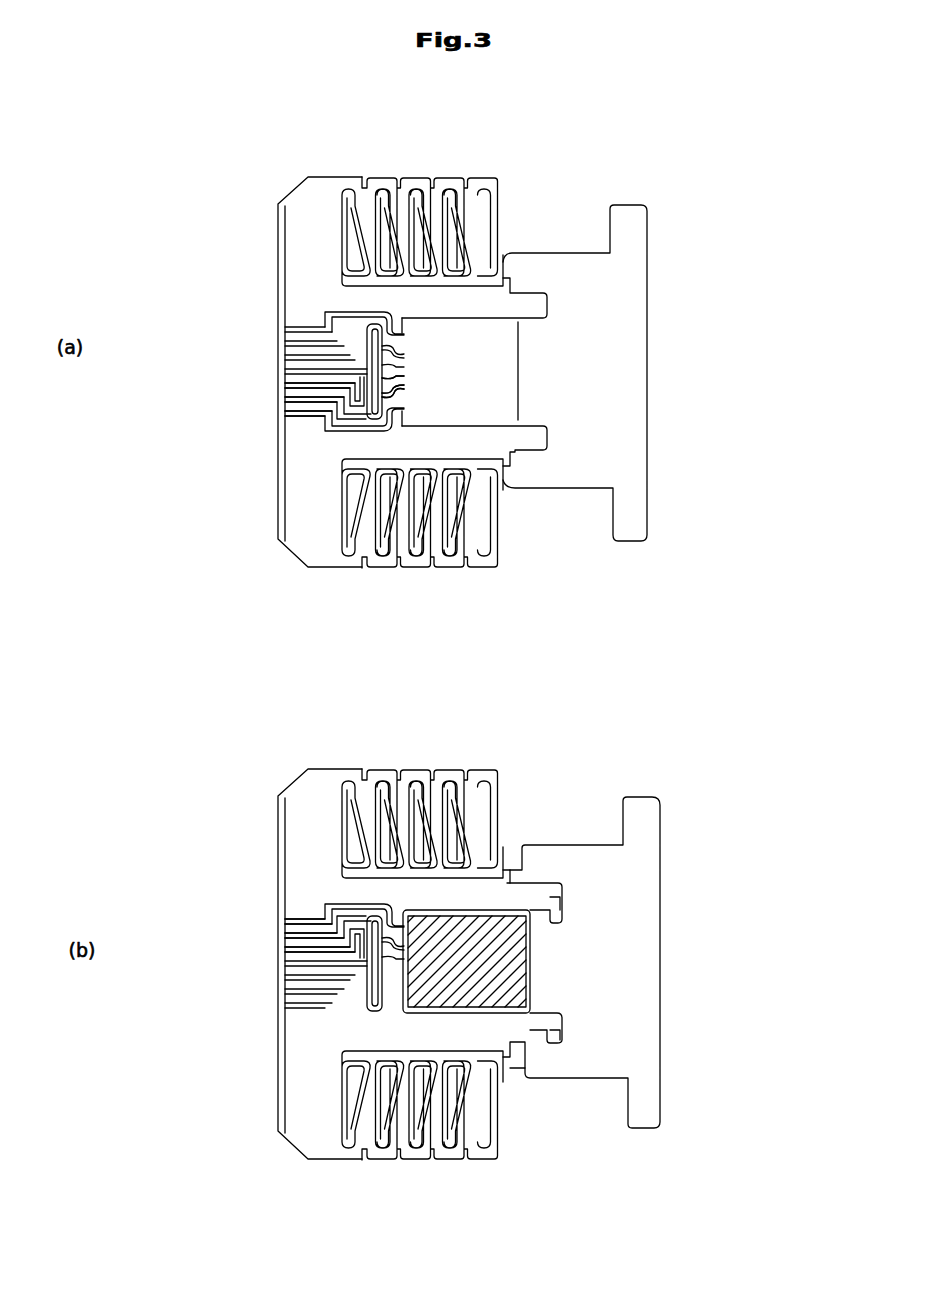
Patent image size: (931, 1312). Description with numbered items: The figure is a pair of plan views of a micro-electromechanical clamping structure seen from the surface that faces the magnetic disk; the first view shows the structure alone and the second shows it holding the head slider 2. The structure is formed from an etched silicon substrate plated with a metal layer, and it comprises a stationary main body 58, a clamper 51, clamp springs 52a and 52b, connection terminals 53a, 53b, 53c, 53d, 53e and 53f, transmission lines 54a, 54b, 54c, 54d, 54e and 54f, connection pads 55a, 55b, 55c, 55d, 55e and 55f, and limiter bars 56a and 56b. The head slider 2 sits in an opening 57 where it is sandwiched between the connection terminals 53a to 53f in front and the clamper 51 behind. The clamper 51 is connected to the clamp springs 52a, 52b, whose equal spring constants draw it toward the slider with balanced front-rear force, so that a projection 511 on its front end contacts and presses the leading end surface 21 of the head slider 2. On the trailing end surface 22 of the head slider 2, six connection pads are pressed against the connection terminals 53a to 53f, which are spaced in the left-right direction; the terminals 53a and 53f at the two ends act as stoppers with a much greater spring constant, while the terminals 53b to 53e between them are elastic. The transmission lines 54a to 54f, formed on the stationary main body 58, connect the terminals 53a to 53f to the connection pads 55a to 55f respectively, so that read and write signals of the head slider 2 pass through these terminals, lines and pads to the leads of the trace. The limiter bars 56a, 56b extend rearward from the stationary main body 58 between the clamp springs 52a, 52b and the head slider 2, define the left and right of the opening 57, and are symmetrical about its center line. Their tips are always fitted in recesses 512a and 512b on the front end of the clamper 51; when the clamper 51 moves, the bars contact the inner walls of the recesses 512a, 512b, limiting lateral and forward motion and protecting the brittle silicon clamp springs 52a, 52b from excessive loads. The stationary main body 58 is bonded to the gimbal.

The head slider 2 is at (550, 883).
The leading end surface 21 is at (530, 990).
The trailing end surface 22 is at (317, 1010).
The clamper 51 is at (647, 218).
The projection 511 is at (516, 374).
The recess 512a is at (562, 925).
The recess 512b is at (550, 1053).
The clamp spring 52a is at (415, 180).
The clamp spring 52b is at (440, 567).
The connection terminal 53a is at (404, 333).
The connection terminal 53b is at (404, 352).
The connection terminal 53c is at (404, 366).
The connection terminal 53d is at (404, 377).
The connection terminal 53e is at (404, 391).
The connection terminal 53f is at (405, 412).
The transmission line 54a is at (323, 918).
The transmission line 54b is at (308, 938).
The transmission line 54c is at (288, 932).
The transmission line 54d is at (287, 990).
The transmission line 54e is at (287, 1000).
The transmission line 54f is at (290, 1010).
The connection pad 55a is at (279, 330).
The connection pad 55b is at (279, 348).
The connection pad 55c is at (279, 364).
The connection pad 55d is at (279, 385).
The connection pad 55e is at (279, 404).
The connection pad 55f is at (279, 416).
The limiter bar 56a is at (508, 883).
The limiter bar 56b is at (512, 1068).
The opening 57 is at (517, 330).
The stationary main body 58 is at (300, 187).